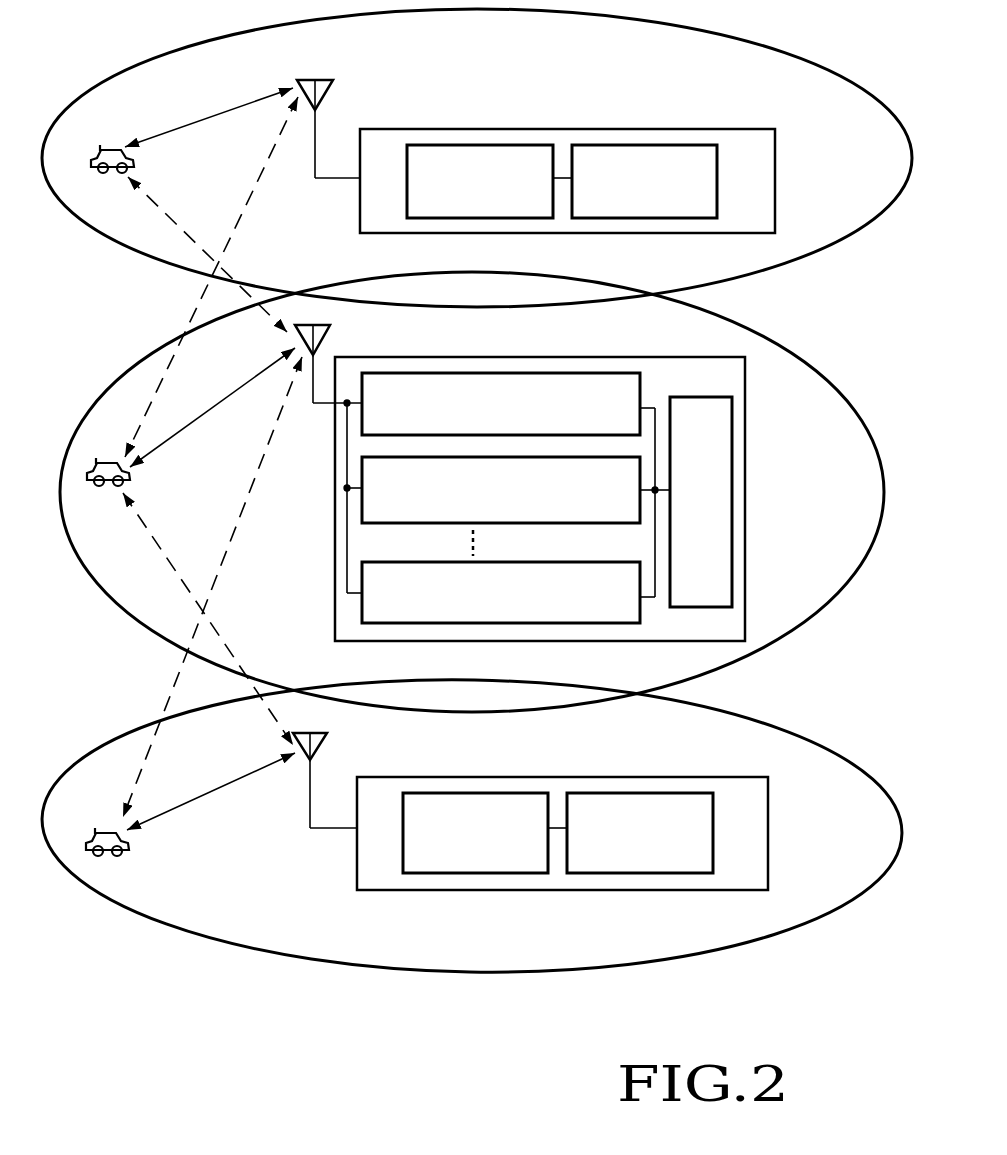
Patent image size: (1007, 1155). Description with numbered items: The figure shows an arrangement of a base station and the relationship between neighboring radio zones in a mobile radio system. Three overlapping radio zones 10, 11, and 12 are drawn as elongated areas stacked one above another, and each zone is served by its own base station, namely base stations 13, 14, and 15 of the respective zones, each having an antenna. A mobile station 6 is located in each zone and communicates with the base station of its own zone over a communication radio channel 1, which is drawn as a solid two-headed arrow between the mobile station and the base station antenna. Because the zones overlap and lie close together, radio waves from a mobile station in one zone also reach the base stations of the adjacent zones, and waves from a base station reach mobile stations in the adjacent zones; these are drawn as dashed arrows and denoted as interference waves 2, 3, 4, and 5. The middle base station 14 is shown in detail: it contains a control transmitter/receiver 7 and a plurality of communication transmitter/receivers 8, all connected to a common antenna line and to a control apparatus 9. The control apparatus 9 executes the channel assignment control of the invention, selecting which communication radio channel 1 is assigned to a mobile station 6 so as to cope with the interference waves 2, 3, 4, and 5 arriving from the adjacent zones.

The communication radio channel 1 is at (198, 416).
The interference wave 2 is at (164, 210).
The interference wave 3 is at (230, 538).
The interference wave 4 is at (173, 567).
The interference wave 5 is at (248, 200).
The mobile station 6 is at (98, 490).
The control transmitter/receiver 7 is at (643, 385).
The communication transmitter/receiver 8 is at (397, 524).
The control apparatus 9 is at (695, 607).
The radio zone 10 is at (823, 247).
The radio zone 11 is at (797, 623).
The radio zone 12 is at (800, 922).
The base station 13 is at (775, 150).
The base station 14 is at (542, 483).
The base station 15 is at (768, 808).